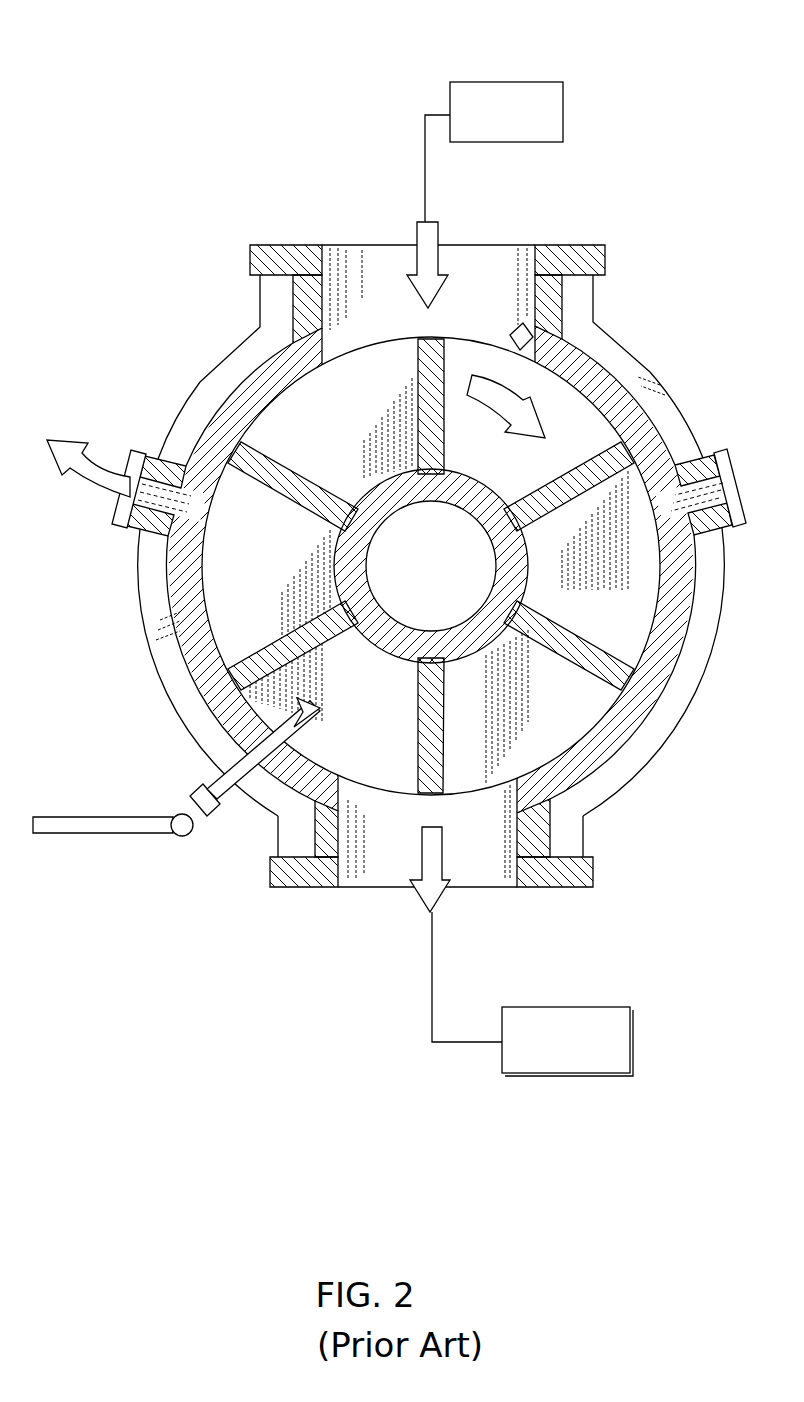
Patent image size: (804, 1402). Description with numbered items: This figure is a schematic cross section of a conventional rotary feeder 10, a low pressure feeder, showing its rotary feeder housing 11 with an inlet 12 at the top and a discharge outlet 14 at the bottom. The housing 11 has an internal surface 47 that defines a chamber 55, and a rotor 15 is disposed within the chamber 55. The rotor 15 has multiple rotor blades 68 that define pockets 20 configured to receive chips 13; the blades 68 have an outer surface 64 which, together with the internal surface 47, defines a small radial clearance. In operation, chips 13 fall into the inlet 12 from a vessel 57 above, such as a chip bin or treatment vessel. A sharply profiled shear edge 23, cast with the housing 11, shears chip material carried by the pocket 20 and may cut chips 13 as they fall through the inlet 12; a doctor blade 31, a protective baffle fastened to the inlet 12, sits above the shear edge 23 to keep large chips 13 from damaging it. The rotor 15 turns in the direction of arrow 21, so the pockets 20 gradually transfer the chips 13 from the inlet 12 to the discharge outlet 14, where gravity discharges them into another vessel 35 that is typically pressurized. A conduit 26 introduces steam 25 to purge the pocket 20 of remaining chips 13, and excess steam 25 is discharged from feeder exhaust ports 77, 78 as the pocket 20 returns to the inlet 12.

The rotary feeder 10 is at (409, 554).
The rotary feeder housing 11 is at (193, 377).
The inlet 12 is at (467, 243).
The chips 13 is at (440, 900).
The discharge outlet 14 is at (373, 893).
The rotor 15 is at (520, 552).
The pocket 20 is at (431, 537).
The arrow 21 is at (487, 410).
The shear edge 23 is at (593, 322).
The steam 25 is at (305, 718).
The conduit 26 is at (102, 833).
The doctor blade 31 is at (510, 323).
The vessel 35 is at (565, 1007).
The internal surface 47 is at (200, 535).
The chamber 55 is at (377, 425).
The vessel 57 is at (493, 82).
The outer surface 64 is at (422, 337).
The rotor blades 68 is at (578, 658).
The feeder exhaust port 77 is at (670, 507).
The feeder exhaust port 78 is at (187, 507).